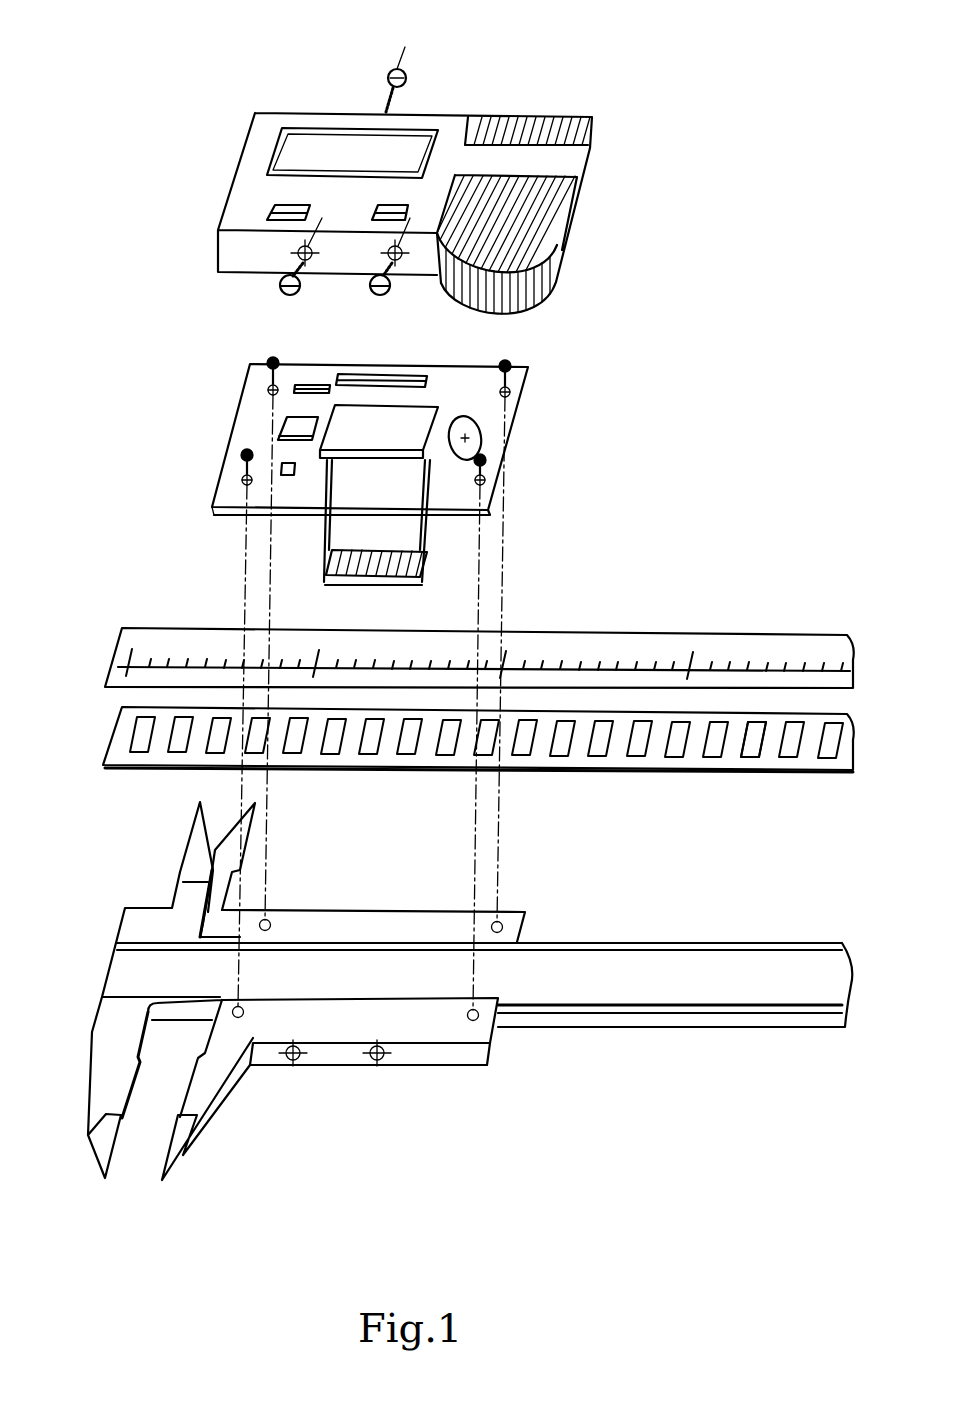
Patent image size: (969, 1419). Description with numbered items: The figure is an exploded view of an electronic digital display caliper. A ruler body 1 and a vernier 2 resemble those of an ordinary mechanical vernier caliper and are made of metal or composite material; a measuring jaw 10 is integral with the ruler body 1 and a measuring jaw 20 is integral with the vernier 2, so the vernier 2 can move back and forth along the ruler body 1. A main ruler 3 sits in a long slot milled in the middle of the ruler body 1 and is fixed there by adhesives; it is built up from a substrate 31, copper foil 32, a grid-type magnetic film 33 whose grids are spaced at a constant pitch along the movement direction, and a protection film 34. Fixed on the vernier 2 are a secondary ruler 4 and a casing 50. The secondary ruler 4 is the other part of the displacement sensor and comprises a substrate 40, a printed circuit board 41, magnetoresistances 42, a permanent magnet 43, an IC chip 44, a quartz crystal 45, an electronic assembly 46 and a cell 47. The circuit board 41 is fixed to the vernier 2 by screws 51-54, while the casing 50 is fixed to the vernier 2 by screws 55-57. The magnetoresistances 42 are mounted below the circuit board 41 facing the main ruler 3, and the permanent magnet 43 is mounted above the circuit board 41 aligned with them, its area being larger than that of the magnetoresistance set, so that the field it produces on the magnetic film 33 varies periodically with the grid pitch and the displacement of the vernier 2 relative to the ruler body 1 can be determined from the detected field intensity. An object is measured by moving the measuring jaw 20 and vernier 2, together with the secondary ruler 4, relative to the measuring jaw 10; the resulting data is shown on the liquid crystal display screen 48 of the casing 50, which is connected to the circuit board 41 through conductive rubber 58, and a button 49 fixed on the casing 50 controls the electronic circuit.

The ruler body 1 is at (470, 1033).
The vernier 2 is at (323, 1034).
The main ruler 3 is at (478, 781).
The substrate 31 is at (672, 770).
The copper foil 32 is at (753, 755).
The magnetic film 33 is at (837, 740).
The protection film 34 is at (773, 643).
The secondary ruler 4 is at (495, 440).
The substrate 40 is at (392, 580).
The printed circuit board 41 is at (218, 507).
The magnetoresistances 42 is at (343, 575).
The permanent magnet 43 is at (390, 427).
The IC chip 44 is at (295, 425).
The quartz crystal 45 is at (315, 382).
The electronic assembly 46 is at (280, 463).
The cell 47 is at (475, 433).
The liquid crystal display screen 48 is at (290, 162).
The button 49 is at (287, 210).
The casing 50 is at (558, 160).
The screws 51-54 is at (508, 362).
The screws 55-57 is at (405, 72).
The conductive rubber 58 is at (357, 383).
The measuring jaw 10 is at (105, 1152).
The measuring jaw 20 is at (178, 1147).